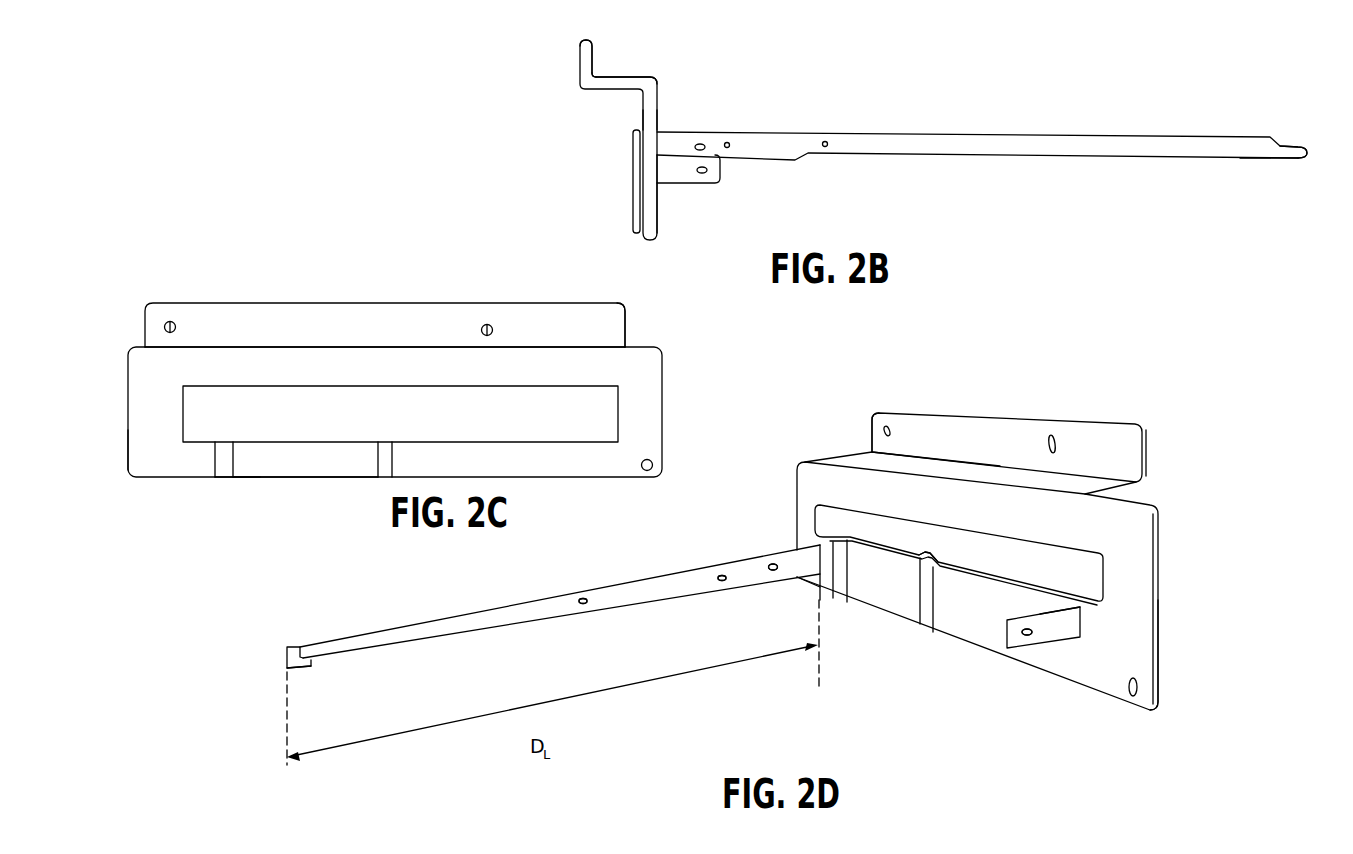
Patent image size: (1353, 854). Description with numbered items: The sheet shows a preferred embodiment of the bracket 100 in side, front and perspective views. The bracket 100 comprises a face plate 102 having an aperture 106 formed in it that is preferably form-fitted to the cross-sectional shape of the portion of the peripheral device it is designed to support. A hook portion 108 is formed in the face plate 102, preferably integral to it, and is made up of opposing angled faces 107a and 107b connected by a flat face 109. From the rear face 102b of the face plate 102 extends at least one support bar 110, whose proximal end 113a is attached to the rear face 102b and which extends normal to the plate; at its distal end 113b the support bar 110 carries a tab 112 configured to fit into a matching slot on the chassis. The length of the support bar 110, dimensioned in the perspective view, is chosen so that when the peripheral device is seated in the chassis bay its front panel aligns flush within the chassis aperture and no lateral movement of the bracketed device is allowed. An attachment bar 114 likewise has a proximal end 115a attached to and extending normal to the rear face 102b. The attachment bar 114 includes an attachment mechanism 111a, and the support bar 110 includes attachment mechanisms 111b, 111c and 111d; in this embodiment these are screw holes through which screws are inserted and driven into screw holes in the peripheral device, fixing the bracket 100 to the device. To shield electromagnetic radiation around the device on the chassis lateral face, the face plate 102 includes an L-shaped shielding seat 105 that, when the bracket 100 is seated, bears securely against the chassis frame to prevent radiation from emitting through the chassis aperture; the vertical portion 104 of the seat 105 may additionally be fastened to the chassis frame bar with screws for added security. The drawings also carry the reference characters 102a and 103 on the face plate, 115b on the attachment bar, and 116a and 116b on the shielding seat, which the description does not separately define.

In FIG. 2B, the bracket 100 is at (866, 34).
In FIG. 2C, the bracket 100 is at (116, 233).
In FIG. 2B, the face plate 102 is at (658, 105).
In FIG. 2C, the face plate 102 is at (127, 383).
In FIG. 2D, the face plate 102 is at (812, 483).
In FIG. 2B, the first side of bracket body 102a is at (631, 120).
In FIG. 2C, the first side of bracket body 102a is at (136, 450).
In FIG. 2B, the rear face 102b is at (672, 121).
In FIG. 2D, the rear face 102b is at (1112, 689).
In FIG. 2B, the bend line 103 is at (592, 86).
In FIG. 2C, the bend line 103 is at (130, 346).
In FIG. 2D, the bend line 103 is at (878, 462).
In FIG. 2B, the vertical portion 104 is at (580, 60).
In FIG. 2C, the vertical portion 104 is at (614, 338).
In FIG. 2D, the vertical portion 104 is at (878, 418).
In FIG. 2B, the shielding seat 105 is at (622, 76).
In FIG. 2C, the shielding seat 105 is at (124, 308).
In FIG. 2D, the shielding seat 105 is at (1168, 469).
In FIG. 2C, the aperture 106 is at (608, 411).
In FIG. 2D, the aperture 106 is at (821, 514).
In FIG. 2C, the angled face 107a is at (225, 476).
In FIG. 2D, the angled face 107a is at (933, 636).
In FIG. 2C, the angled face 107b is at (390, 476).
In FIG. 2D, the angled face 107b is at (832, 604).
In FIG. 2B, the hook portion 108 is at (633, 213).
In FIG. 2C, the hook portion 108 is at (233, 547).
In FIG. 2D, the hook portion 108 is at (953, 550).
In FIG. 2C, the flat face 109 is at (306, 468).
In FIG. 2D, the flat face 109 is at (893, 605).
In FIG. 2B, the support bar 110 is at (895, 132).
In FIG. 2D, the support bar 110 is at (462, 612).
In FIG. 2D, the attachment mechanism 111a is at (1026, 638).
In FIG. 2D, the attachment mechanism 111b is at (773, 572).
In FIG. 2D, the attachment mechanism 111c is at (723, 583).
In FIG. 2D, the attachment mechanism 111d is at (584, 606).
In FIG. 2B, the tab 112 is at (1295, 146).
In FIG. 2D, the tab 112 is at (287, 658).
In FIG. 2B, the proximal end 113a is at (678, 205).
In FIG. 2D, the proximal end 113a is at (805, 565).
In FIG. 2B, the distal end 113b is at (1265, 186).
In FIG. 2D, the distal end 113b is at (305, 668).
In FIG. 2D, the attachment bar 114 is at (1058, 637).
In FIG. 2C, the proximal end 115a is at (172, 320).
In FIG. 2D, the proximal end 115a is at (1075, 625).
In FIG. 2C, the mounting hole 115b is at (488, 323).
In FIG. 2D, the mounting hole 115b is at (1014, 638).
In FIG. 2D, the flange hole 116a is at (1055, 437).
In FIG. 2D, the flange hole 116b is at (892, 428).